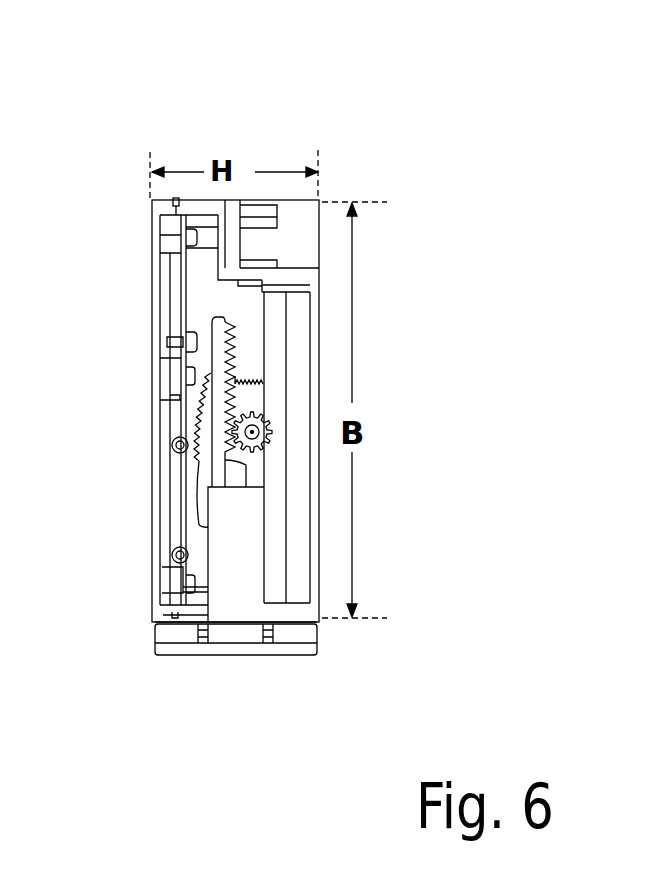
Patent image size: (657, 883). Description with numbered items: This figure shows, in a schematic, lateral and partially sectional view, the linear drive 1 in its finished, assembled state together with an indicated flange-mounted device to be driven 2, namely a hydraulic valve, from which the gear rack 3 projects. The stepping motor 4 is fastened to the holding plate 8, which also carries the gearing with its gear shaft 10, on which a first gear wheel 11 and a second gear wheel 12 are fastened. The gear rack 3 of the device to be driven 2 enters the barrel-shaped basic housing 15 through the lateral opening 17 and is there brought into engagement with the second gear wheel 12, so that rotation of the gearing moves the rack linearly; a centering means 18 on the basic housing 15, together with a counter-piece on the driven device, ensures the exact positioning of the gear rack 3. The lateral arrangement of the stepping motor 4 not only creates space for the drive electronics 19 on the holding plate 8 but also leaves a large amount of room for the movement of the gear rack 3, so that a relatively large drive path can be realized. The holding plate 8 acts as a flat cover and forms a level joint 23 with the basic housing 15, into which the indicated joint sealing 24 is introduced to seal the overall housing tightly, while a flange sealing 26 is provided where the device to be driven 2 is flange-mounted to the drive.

The linear drive 1 is at (236, 398).
The device to be driven 2 is at (175, 655).
The gear rack 3 is at (218, 358).
The stepping motor 4 is at (205, 514).
The holding plate 8 is at (153, 270).
The gear shaft 10 is at (256, 430).
The first gear wheel 11 is at (207, 433).
The second gear wheel 12 is at (267, 440).
The basic housing 15 is at (313, 565).
The opening 17 is at (233, 612).
The centering means 18 is at (133, 603).
The drive electronics 19 is at (190, 313).
The joint 23 is at (175, 200).
The joint sealing 24 is at (180, 205).
The flange sealing 26 is at (253, 623).